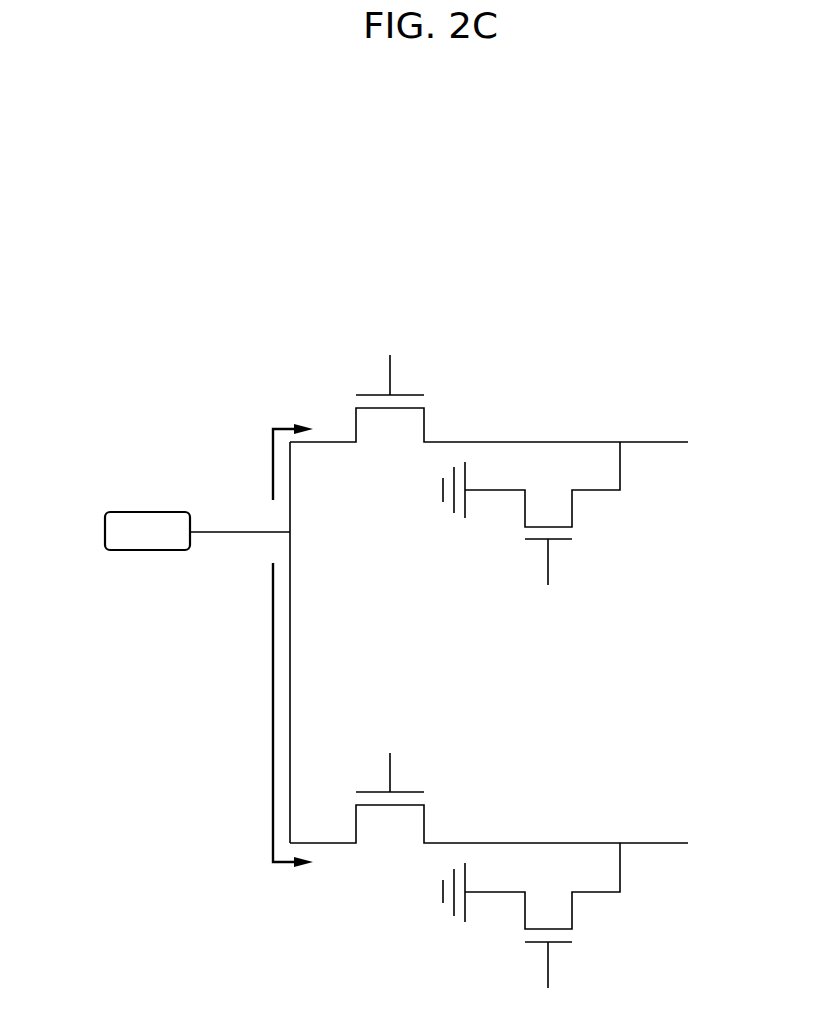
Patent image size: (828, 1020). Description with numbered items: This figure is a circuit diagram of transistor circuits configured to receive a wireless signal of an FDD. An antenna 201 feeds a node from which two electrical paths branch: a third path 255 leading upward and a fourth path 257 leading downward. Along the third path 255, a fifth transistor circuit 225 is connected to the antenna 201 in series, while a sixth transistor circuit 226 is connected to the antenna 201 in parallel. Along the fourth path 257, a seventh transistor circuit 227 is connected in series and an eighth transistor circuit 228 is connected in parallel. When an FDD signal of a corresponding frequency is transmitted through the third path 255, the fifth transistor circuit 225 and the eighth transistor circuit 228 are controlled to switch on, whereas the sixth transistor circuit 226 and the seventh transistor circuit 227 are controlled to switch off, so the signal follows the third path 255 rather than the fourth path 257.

The antenna 201 is at (105, 517).
The fifth transistor circuit 225 is at (390, 372).
The sixth transistor circuit 226 is at (620, 467).
The seventh transistor circuit 227 is at (390, 769).
The eighth transistor circuit 228 is at (620, 869).
The third path 255 is at (273, 463).
The fourth path 257 is at (273, 717).